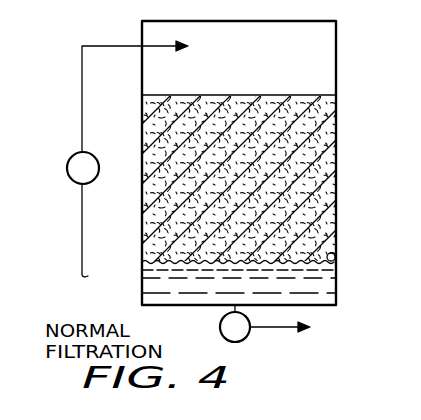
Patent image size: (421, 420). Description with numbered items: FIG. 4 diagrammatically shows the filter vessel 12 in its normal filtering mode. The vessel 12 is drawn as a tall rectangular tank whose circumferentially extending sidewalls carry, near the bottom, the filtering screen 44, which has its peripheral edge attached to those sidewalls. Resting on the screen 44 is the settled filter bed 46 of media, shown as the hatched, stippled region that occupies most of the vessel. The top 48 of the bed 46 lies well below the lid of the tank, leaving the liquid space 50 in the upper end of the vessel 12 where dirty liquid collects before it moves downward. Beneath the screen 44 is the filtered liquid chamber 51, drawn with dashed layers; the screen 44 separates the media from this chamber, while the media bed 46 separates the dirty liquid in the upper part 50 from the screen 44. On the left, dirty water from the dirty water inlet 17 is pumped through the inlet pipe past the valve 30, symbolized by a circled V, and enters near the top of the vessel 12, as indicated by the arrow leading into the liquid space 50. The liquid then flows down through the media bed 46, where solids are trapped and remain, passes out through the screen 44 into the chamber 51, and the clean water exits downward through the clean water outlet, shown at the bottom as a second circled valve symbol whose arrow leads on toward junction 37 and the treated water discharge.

The filter vessel 12 is at (337, 154).
The liquid space 50 is at (250, 61).
The top of the bed 48 is at (200, 95).
The filter bed 46 is at (250, 177).
The filtering screen 44 is at (335, 257).
The filtered liquid chamber 51 is at (246, 286).
The valve 30 is at (68, 160).
The dirty water inlet 17 is at (82, 219).
The junction 37 is at (246, 339).